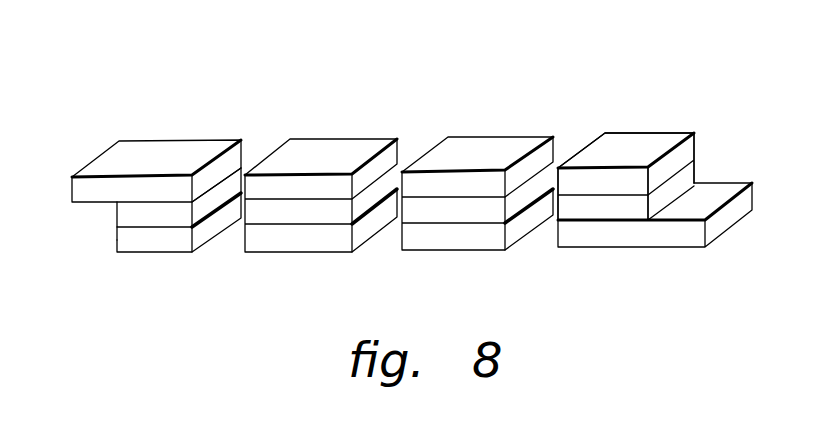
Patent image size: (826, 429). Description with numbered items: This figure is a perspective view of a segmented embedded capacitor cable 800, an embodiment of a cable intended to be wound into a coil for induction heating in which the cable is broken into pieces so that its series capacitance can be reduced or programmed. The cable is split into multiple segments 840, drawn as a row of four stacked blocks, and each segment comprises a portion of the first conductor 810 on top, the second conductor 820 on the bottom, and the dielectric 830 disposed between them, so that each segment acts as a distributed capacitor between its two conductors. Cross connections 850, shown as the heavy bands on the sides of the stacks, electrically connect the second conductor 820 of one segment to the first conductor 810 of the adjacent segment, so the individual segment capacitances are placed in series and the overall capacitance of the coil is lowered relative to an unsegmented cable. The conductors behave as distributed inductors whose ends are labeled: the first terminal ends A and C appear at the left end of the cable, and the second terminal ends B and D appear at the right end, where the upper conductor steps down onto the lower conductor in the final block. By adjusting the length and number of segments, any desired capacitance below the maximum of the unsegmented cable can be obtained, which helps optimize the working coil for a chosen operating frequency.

The segmented embedded capacitor cable 800 is at (467, 62).
The first conductor 810 is at (142, 124).
The second conductor 820 is at (132, 254).
The dielectric 830 is at (115, 210).
The segments 840 is at (207, 148).
The cross connections 850 is at (208, 240).
The first terminal end A is at (117, 145).
The second terminal end B is at (698, 148).
The first terminal end C is at (115, 238).
The second terminal end D is at (715, 230).